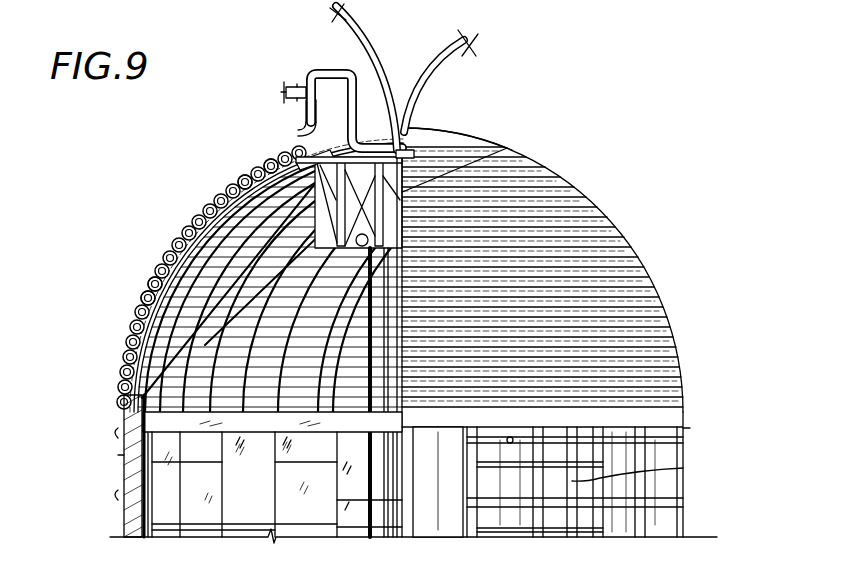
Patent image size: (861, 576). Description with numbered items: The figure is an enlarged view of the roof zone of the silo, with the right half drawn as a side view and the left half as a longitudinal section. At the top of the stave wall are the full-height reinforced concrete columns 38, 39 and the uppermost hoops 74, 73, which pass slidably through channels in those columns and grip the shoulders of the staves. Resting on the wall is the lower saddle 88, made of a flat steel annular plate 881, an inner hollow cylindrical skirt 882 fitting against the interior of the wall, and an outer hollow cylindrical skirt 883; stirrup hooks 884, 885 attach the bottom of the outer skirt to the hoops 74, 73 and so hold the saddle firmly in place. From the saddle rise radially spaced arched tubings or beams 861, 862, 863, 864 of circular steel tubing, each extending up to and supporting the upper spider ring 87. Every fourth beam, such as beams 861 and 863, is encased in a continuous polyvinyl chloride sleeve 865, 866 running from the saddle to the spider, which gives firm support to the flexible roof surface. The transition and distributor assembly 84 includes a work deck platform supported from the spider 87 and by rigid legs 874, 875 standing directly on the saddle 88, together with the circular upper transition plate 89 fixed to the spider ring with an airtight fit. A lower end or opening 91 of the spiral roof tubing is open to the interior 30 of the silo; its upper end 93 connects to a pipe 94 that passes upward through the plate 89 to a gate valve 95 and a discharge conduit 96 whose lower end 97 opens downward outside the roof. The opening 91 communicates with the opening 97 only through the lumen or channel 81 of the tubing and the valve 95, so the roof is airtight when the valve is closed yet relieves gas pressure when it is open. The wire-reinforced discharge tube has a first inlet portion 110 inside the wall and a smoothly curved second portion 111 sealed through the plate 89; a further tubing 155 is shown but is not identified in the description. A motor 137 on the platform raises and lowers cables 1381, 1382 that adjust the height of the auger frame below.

The interior of the silo 30 is at (212, 504).
The column 38 is at (430, 520).
The column 39 is at (622, 432).
The hoop 73 is at (683, 500).
The hoop 74 is at (683, 437).
The lumen or channel 81 is at (178, 236).
The transition and distributor assembly 84 is at (489, 126).
The upper spider ring 87 is at (318, 150).
The lower saddle 88 is at (50, 372).
The upper transition plate 89 is at (433, 132).
The lower end of spiral tubing 91 is at (228, 430).
The upper end of tubing 93 is at (398, 140).
The pipe 94 is at (362, 68).
The gate valve 95 is at (302, 78).
The discharge conduit 96 is at (305, 112).
The lower end of conduit 97 is at (304, 128).
The first inlet portion 110 is at (514, 149).
The second portion 111 is at (377, 62).
The motor 137 is at (370, 330).
The flexible tube 155 is at (425, 70).
The arched tubing 861 is at (143, 305).
The arched tubing 862 is at (240, 180).
The arched tubing 863 is at (265, 160).
The arched tubing 864 is at (227, 360).
The sleeve 865 is at (150, 280).
The sleeve 866 is at (200, 212).
The rigid leg 874 is at (202, 360).
The rigid leg 875 is at (378, 357).
The flat steel annular plate 881 is at (123, 400).
The inner hollow cylindrical skirt 882 is at (153, 433).
The outer hollow cylindrical skirt 883 is at (118, 434).
The stirrup hook 884 is at (118, 456).
The stirrup hook 885 is at (512, 438).
The brace 1381 is at (362, 488).
The brace 1382 is at (367, 510).